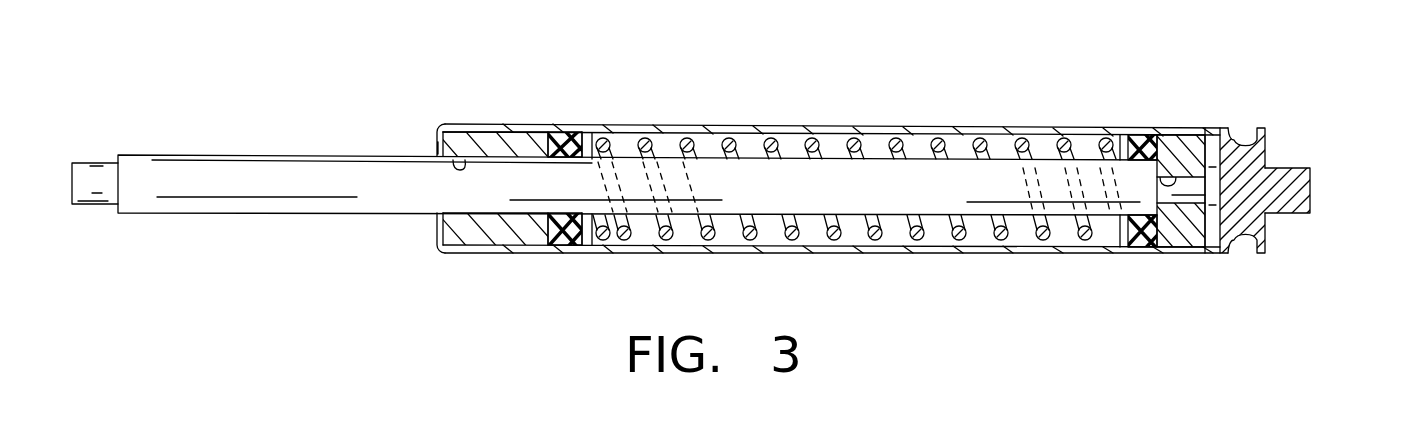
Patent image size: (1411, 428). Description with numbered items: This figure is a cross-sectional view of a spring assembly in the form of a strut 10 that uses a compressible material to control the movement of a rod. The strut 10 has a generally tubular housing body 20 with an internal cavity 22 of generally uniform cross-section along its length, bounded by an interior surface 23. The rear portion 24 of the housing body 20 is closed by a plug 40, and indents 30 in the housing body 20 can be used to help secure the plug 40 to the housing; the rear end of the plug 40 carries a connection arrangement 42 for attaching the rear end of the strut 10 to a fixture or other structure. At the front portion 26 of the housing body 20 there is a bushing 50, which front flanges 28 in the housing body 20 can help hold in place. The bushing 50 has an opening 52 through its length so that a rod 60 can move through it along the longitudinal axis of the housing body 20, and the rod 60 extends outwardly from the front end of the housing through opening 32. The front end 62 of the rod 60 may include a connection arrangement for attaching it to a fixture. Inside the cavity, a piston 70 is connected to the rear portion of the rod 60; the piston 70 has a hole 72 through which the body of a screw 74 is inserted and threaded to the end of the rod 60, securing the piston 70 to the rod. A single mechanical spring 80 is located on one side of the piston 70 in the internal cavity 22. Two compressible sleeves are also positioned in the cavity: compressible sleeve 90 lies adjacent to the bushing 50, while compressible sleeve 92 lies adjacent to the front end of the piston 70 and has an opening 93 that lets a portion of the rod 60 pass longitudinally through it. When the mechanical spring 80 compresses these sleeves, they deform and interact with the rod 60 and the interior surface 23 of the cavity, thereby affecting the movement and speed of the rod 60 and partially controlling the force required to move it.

The strut 10 is at (759, 74).
The housing body 20 is at (816, 197).
The internal cavity 22 is at (877, 148).
The interior surface 23 is at (698, 146).
The rear portion 24 is at (1195, 252).
The front portion 26 is at (515, 252).
The front flanges 28 is at (437, 225).
The indents 30 is at (1243, 138).
The opening 32 is at (437, 146).
The plug 40 is at (1240, 180).
The connection arrangement 42 is at (1305, 187).
The bushing 50 is at (480, 163).
The opening 52 is at (455, 160).
The rod 60 is at (638, 208).
The front end 62 is at (83, 160).
The piston 70 is at (1167, 203).
The hole 72 is at (1158, 150).
The screw 74 is at (1178, 196).
The mechanical spring 80 is at (887, 234).
The compressible sleeve 90 is at (570, 132).
The compressible sleeve 92 is at (1140, 240).
The opening 93 is at (1123, 223).